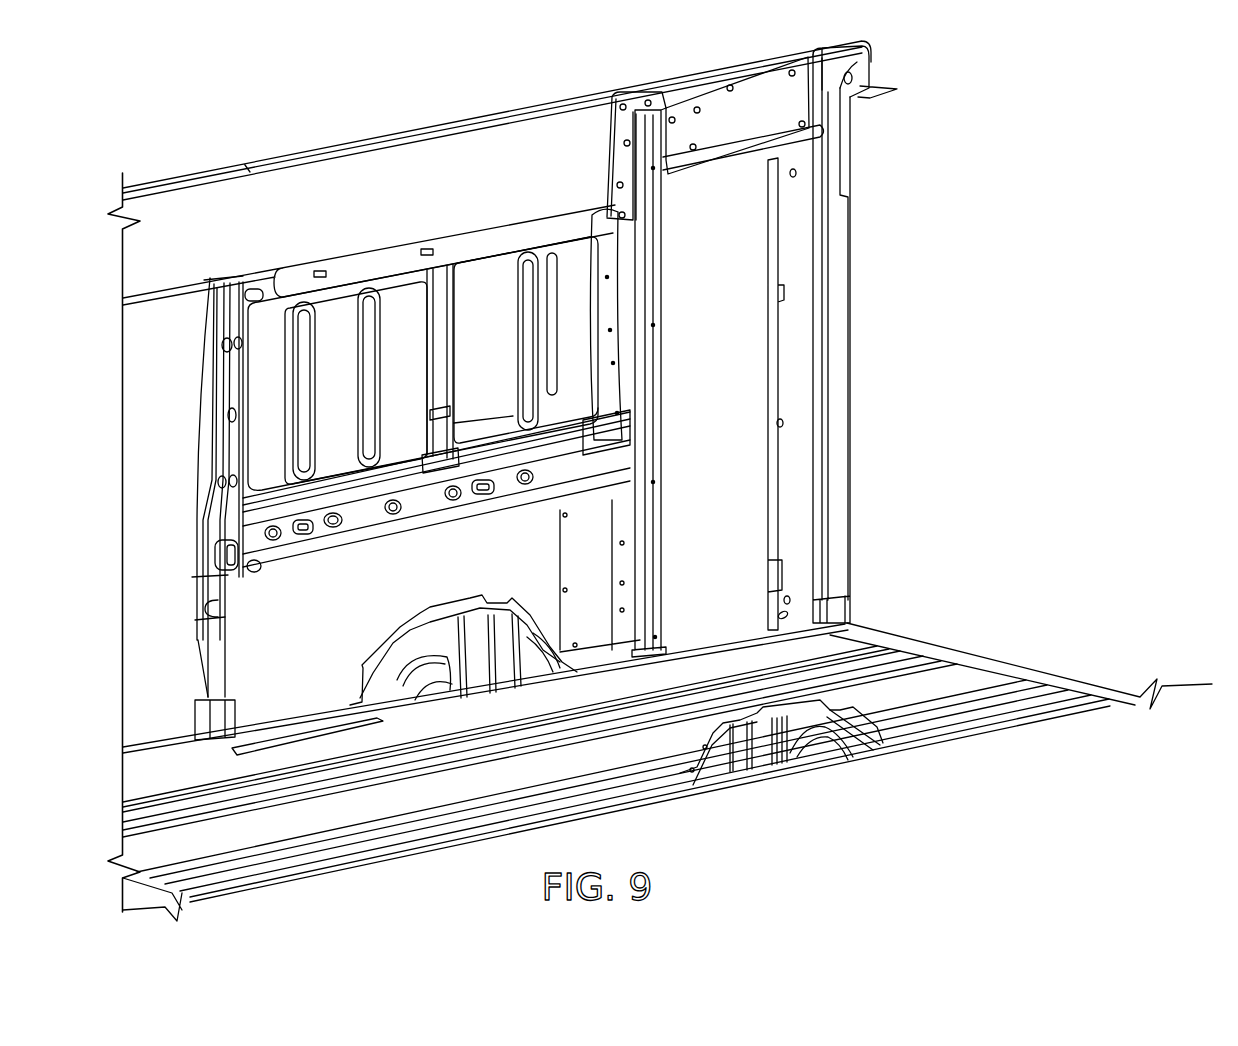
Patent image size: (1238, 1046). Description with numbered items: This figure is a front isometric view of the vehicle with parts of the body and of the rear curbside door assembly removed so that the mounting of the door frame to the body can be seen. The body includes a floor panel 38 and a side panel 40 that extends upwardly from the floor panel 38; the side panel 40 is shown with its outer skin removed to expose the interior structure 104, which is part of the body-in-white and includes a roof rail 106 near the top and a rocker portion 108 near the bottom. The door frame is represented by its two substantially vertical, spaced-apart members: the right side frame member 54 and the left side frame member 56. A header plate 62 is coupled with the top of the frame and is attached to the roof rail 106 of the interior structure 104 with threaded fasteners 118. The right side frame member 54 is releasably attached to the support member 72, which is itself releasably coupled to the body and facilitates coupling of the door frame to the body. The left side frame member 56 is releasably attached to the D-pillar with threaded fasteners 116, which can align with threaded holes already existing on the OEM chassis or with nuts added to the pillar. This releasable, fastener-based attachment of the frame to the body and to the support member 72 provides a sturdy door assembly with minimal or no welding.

The floor panel 38 is at (983, 670).
The side panel 40 is at (199, 356).
The right side frame member 54 is at (665, 407).
The left side frame member 56 is at (847, 290).
The header plate 62 is at (753, 90).
The support member 72 is at (598, 288).
The interior structure 104 is at (226, 434).
The roof rail 106 is at (387, 257).
The rocker portion 108 is at (405, 527).
The threaded fasteners 116 is at (800, 173).
The threaded fasteners 118 is at (680, 103).